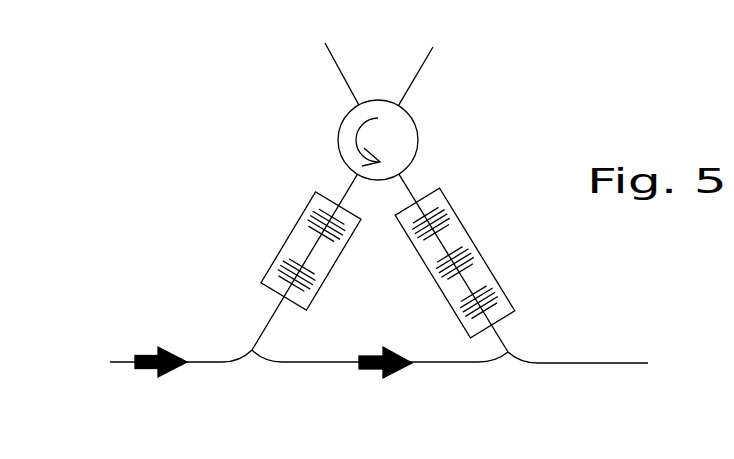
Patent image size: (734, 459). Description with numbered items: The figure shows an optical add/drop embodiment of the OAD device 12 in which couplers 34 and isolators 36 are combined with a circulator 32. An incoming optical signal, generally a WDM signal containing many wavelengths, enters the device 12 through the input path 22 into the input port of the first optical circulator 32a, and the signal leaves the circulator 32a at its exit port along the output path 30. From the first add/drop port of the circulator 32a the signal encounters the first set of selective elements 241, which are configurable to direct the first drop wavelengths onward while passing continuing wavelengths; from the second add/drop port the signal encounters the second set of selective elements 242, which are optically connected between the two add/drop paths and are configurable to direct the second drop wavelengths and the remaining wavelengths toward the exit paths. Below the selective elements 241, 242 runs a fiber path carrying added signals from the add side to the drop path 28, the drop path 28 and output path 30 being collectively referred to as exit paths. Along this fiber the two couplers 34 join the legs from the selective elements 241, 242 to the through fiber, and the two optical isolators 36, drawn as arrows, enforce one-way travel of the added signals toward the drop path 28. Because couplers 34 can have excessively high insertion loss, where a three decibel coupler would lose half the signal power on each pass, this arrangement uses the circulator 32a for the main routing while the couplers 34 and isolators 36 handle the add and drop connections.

The OAD device 12 is at (587, 72).
The input path 22 is at (337, 68).
The output path 30 is at (418, 73).
The first optical circulator 32a is at (417, 150).
The first set of selective elements 241 is at (267, 267).
The second set of selective elements 242 is at (490, 263).
The optical circulator 32 is at (210, 362).
The coupler 34 is at (252, 350).
The optical isolator 36 is at (157, 352).
The drop path 28 is at (627, 362).